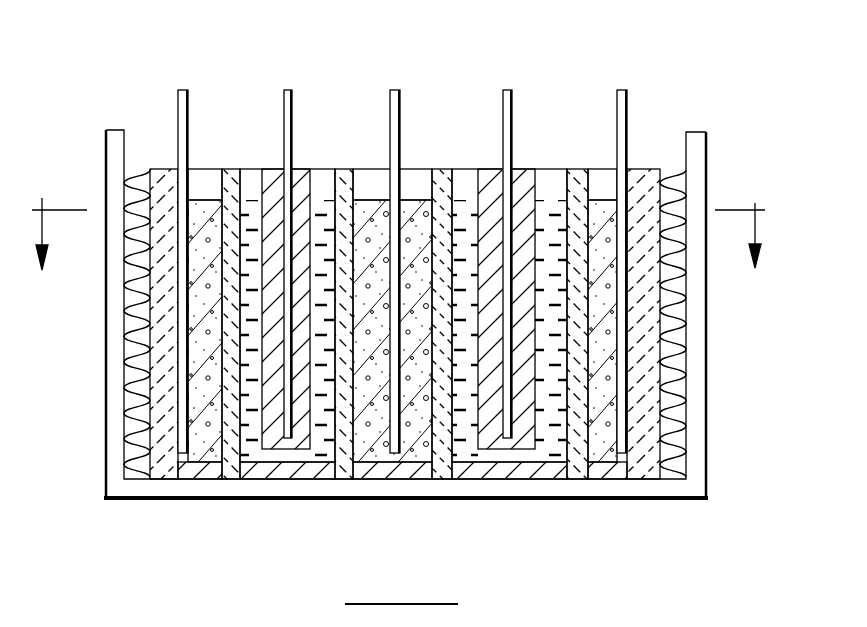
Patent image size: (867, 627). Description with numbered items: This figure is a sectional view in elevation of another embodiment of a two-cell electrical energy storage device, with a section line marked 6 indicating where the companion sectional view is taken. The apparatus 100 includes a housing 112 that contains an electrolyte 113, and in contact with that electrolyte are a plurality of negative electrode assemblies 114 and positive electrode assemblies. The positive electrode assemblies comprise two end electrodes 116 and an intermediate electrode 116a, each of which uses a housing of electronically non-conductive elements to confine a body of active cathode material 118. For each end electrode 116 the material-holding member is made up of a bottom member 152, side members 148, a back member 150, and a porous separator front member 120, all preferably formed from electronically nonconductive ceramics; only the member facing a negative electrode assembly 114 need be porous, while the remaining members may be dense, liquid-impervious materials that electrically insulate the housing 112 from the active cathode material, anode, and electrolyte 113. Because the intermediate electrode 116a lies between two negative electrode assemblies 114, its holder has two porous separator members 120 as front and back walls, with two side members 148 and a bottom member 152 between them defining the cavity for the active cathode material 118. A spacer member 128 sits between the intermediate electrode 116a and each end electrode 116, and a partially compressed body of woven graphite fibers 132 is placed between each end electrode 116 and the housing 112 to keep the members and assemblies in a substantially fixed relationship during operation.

The apparatus 100 is at (712, 129).
The housing 112 is at (706, 155).
The electrolyte 113 is at (320, 210).
The negative electrode assemblies 114 is at (294, 166).
The end electrodes 116 is at (191, 111).
The intermediate electrode 116a is at (413, 127).
The active cathode material 118 is at (203, 455).
The porous separator front member 120 is at (228, 473).
The spacer member 128 is at (285, 470).
The partially compressed body of woven graphite fibers 132 is at (124, 340).
The side members 148 is at (200, 167).
The back member 150 is at (156, 410).
The bottom member 152 is at (200, 474).
The section line 6- 6 is at (55, 292).